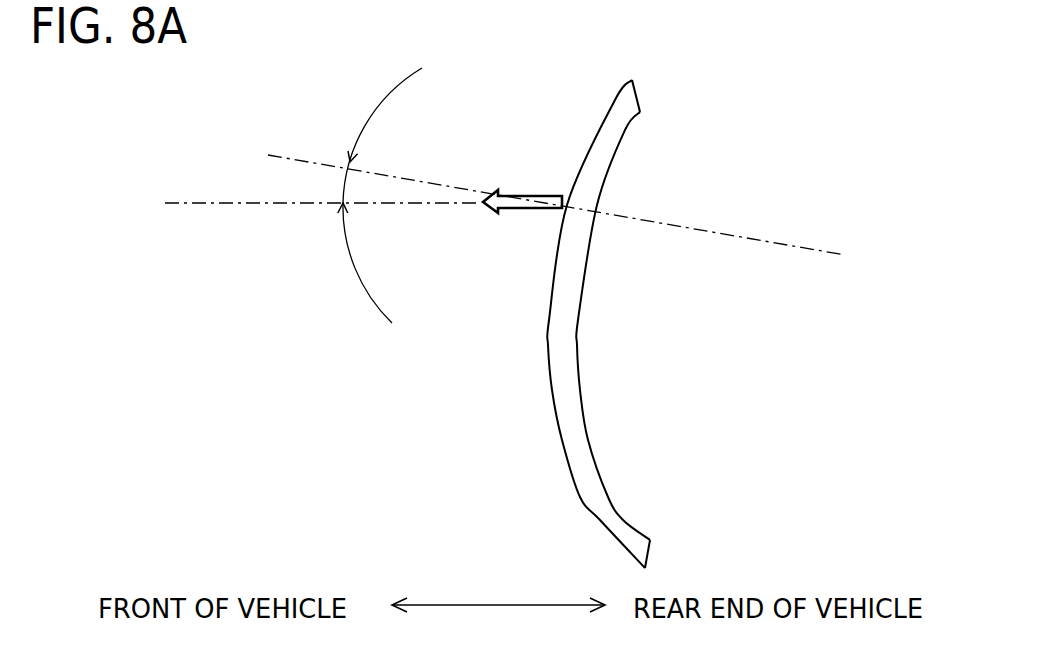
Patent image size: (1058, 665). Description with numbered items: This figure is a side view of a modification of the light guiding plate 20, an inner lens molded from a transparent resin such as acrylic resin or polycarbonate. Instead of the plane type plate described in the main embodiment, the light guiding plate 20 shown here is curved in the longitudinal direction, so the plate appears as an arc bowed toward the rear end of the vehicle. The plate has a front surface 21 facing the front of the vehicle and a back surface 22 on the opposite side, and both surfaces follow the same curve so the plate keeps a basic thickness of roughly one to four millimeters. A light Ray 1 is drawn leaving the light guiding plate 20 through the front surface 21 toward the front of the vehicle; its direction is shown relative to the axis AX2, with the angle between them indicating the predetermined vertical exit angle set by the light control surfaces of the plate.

The light guiding plate 20 is at (569, 302).
The front surface 21 is at (553, 272).
The back surface 22 is at (578, 315).
The second optical axis AX2 is at (268, 155).
The light Ray 1 Ray1 is at (490, 212).